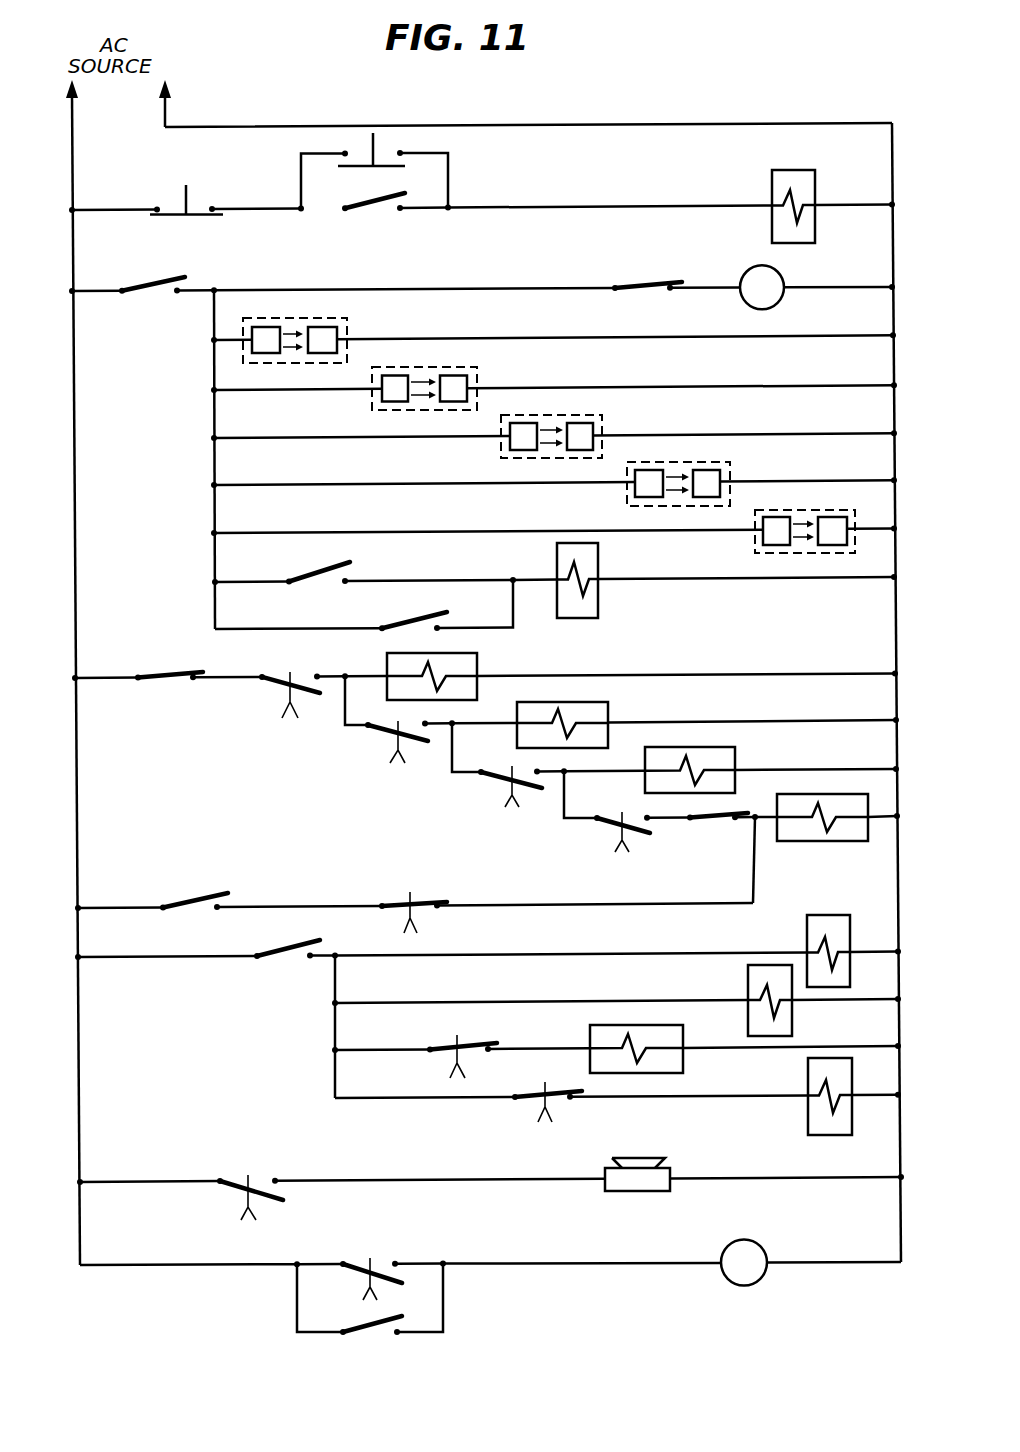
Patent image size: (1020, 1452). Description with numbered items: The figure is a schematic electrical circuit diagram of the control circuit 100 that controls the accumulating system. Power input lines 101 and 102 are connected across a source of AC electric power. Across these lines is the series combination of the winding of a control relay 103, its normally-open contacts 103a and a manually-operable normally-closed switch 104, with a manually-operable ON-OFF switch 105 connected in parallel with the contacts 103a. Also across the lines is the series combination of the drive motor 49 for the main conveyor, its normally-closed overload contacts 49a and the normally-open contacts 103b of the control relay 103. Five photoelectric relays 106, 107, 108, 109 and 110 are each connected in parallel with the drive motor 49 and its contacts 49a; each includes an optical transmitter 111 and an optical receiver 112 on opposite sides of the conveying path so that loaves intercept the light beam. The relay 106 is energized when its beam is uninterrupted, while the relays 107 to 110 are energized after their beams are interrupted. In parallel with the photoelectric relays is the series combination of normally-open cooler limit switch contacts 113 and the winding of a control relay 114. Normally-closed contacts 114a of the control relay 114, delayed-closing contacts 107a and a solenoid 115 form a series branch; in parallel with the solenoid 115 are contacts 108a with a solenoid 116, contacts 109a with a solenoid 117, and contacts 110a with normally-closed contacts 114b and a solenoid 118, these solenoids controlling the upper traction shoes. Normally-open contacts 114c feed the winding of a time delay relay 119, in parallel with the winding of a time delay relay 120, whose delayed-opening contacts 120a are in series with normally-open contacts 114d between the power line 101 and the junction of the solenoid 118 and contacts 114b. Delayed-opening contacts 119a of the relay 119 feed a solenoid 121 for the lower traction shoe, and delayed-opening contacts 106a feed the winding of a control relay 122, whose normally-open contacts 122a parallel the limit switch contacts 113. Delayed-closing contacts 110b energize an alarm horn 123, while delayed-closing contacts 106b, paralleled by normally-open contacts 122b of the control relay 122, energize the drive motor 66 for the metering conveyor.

The electrical control circuit 100 is at (662, 82).
The power input line 101 is at (72, 147).
The power input line 102 is at (258, 127).
The control relay 103 is at (815, 183).
The normally-open contacts of control relay 103 103a is at (363, 208).
The normally-open contacts of control relay 103 103b is at (145, 278).
The manually-operable normally-closed switch 104 is at (193, 217).
The manually-operable ON-OFF switch 105 is at (357, 172).
The photoelectric relay 106 is at (347, 332).
The photoelectric relay 107 is at (478, 377).
The photoelectric relay 108 is at (602, 422).
The photoelectric relay 109 is at (732, 468).
The photoelectric relay 110 is at (753, 532).
The optical transmitter 111 is at (247, 350).
The optical receiver 112 is at (318, 352).
The limit switch contacts 113 is at (313, 575).
The control relay 114 is at (598, 598).
The normally-closed contacts of control relay 114 114a is at (160, 673).
The normally-closed contacts of control relay 114 114b is at (715, 818).
The normally-open contacts of control relay 114 114c is at (280, 955).
The normally-open contacts of control relay 114 114d is at (190, 897).
The solenoid 115 is at (478, 660).
The solenoid 116 is at (608, 707).
The solenoid 117 is at (735, 755).
The solenoid 118 is at (835, 843).
The time delay relay 119 is at (807, 927).
The normally-closed, delayed-opening contacts of relay 119 119a is at (448, 1043).
The time delay relay 120 is at (748, 975).
The normally-closed, delayed-opening contacts of relay 120 120a is at (422, 898).
The solenoid 121 is at (590, 1033).
The control relay 122 is at (808, 1108).
The normally-open contacts of control relay 122 122a is at (403, 620).
The normally-open contacts of control relay 122 122b is at (367, 1333).
The alarm horn 123 is at (635, 1157).
The normally-closed, delayed-opening contacts of photoelectric relay 106 106a is at (528, 1105).
The normally-open, delayed-closing contacts of photoelectric relay 106 106b is at (362, 1262).
The normally-open, delayed-closing contacts of photoelectric relay 107 107a is at (273, 687).
The normally-open, delayed-closing contacts of photoelectric relay 108 108a is at (375, 738).
The normally-open, delayed-closing contacts of photoelectric relay 109 109a is at (493, 780).
The normally-open, delayed-closing contacts of photoelectric relay 110 110a is at (608, 827).
The normally-open, delayed-closing contacts of photoelectric relay 110 110b is at (233, 1180).
The drive motor 49 is at (750, 266).
The normally-closed overload contacts 49a is at (635, 283).
The drive motor 66 is at (758, 1282).